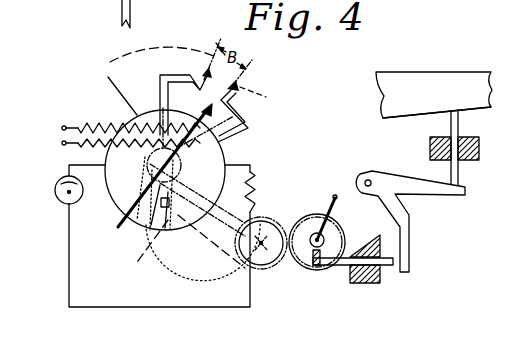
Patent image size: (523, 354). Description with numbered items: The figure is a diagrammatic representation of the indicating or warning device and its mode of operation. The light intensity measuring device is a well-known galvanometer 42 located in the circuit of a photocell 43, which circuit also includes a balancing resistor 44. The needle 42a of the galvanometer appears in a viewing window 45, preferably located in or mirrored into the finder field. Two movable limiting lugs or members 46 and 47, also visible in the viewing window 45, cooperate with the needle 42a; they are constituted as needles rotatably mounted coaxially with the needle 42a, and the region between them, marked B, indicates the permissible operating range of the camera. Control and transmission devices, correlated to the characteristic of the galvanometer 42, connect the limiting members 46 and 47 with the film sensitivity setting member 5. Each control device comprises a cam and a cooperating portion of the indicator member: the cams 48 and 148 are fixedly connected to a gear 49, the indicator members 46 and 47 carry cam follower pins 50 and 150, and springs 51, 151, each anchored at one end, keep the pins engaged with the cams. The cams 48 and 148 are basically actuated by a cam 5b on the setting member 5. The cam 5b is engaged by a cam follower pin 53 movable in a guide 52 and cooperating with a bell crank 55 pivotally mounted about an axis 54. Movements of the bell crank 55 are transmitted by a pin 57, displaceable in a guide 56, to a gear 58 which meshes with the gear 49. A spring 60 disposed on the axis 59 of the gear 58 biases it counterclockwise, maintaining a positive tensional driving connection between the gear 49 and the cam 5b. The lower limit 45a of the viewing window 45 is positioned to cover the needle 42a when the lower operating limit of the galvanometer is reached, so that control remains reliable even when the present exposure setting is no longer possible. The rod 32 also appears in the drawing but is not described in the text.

The film sensitivity setting member 5 is at (437, 78).
The cam 5b is at (400, 118).
The rod 32 is at (154, 14).
The galvanometer 42 is at (118, 194).
The needle 42a is at (236, 113).
The photocell 43 is at (60, 197).
The balancing resistor 44 is at (253, 186).
The viewing window 45 is at (106, 63).
The lower limit of the viewing window 45a is at (108, 78).
The limiting member 46 is at (239, 60).
The limiting member 47 is at (183, 74).
The cam 48 is at (190, 297).
The gear 49 is at (268, 270).
The cam follower pin 50 is at (142, 222).
The spring 51 is at (91, 124).
The guide 52 is at (431, 150).
The cam follower pin 53 is at (450, 126).
The axis 54 is at (370, 179).
The bell crank 55 is at (396, 207).
The guide 56 is at (363, 284).
The pin 57 is at (393, 266).
The gear 58 is at (299, 268).
The axis 59 is at (315, 233).
The spring 60 is at (331, 200).
The cam 148 is at (195, 244).
The cam follower pin 150 is at (153, 242).
The spring 151 is at (80, 144).